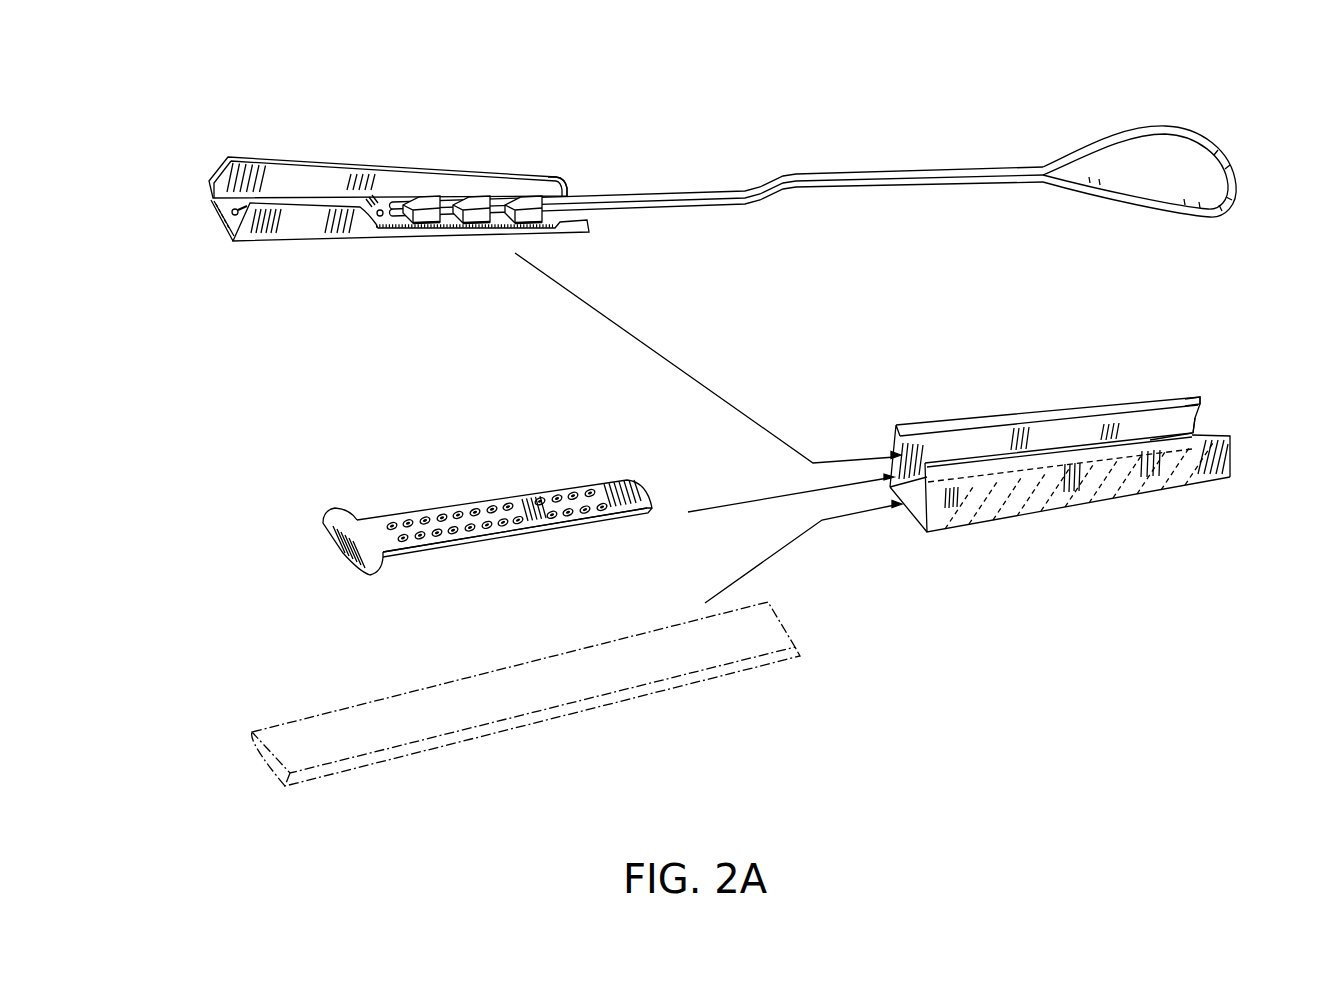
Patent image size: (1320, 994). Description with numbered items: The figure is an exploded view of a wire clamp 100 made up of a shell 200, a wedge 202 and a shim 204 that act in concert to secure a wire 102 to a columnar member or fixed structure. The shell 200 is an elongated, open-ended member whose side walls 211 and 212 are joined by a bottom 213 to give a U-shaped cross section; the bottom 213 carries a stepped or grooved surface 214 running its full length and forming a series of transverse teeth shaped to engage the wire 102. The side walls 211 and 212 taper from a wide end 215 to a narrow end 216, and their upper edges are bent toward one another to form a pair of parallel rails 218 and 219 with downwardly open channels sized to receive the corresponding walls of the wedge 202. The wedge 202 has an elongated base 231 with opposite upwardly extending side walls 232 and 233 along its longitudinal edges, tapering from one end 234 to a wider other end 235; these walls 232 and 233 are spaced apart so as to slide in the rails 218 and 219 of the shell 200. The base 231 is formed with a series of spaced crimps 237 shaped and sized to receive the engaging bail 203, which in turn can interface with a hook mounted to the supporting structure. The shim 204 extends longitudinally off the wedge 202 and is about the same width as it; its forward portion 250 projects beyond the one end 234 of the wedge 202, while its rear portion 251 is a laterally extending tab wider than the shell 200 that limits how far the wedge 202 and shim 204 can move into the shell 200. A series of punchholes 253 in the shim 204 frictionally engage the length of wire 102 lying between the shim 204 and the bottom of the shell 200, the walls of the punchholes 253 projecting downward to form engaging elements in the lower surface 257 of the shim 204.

The wire clamp 100 is at (630, 85).
The engaging bail 203 is at (1113, 136).
The side wall of wedge 232 is at (277, 178).
The side wall of wedge 233 is at (277, 218).
The one end of wedge 234 is at (563, 178).
The wider other end of wedge 235 is at (208, 181).
The elongated base 231 is at (210, 208).
The crimps 237 is at (525, 198).
The wedge 202 is at (410, 238).
The shell 200 is at (1140, 502).
The side wall of shell 211 is at (973, 447).
The side wall of shell 212 is at (1030, 500).
The bottom 213 is at (908, 523).
The stepped or grooved surface 214 is at (1232, 452).
The wide end 215 is at (895, 452).
The narrow end 216 is at (1205, 414).
The rail 218 is at (1063, 413).
The rail 219 is at (1177, 430).
The shim 204 is at (426, 556).
The forward portion of shim 250 is at (620, 480).
The rear portion of shim 251 is at (332, 508).
The punchholes 253 is at (473, 503).
The lower surface of shim 257 is at (520, 545).
The wire 102 is at (543, 712).